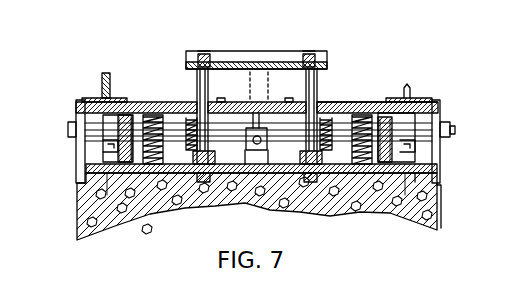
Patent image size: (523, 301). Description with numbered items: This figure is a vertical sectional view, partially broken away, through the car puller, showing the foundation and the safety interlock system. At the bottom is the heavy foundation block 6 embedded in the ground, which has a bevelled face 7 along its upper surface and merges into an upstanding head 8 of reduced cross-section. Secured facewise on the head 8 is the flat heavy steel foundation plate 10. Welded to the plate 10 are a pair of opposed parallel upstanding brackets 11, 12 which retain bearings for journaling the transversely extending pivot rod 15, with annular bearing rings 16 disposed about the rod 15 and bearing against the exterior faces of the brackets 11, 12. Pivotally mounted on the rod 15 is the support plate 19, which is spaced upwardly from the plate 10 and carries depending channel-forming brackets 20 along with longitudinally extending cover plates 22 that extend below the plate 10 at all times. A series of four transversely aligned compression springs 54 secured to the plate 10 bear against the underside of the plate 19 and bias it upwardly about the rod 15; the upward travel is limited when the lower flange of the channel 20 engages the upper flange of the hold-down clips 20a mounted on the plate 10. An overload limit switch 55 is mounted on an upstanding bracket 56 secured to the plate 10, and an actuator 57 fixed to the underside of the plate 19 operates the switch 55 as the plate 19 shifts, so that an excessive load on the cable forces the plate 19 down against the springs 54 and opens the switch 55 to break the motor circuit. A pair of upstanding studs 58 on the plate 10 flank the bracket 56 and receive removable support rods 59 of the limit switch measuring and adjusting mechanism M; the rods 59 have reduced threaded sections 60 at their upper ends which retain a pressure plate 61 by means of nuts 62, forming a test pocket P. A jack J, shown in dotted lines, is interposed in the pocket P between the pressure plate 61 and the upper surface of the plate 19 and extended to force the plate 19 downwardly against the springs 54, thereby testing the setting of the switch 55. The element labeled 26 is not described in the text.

The foundation block 6 is at (431, 202).
The bevelled face 7 is at (88, 205).
The upstanding head 8 is at (410, 180).
The foundation plate 10 is at (68, 152).
The upstanding bracket 11 is at (393, 160).
The upstanding bracket 12 is at (133, 167).
The pivot rod 15 is at (445, 133).
The annular bearing ring 16 is at (113, 127).
The support plate 19 is at (348, 100).
The channel-forming bracket 20 is at (98, 127).
The hold-down clip 20a is at (107, 165).
The cover plate 22 is at (88, 167).
The stop post 26 is at (102, 72).
The compression spring 54 is at (155, 117).
The overload limit switch 55 is at (265, 150).
The upstanding bracket 56 is at (242, 164).
The actuator 57 is at (258, 136).
The upstanding stud 58 is at (203, 167).
The support rod 59 is at (317, 90).
The threaded section 60 is at (205, 54).
The pressure plate 61 is at (263, 51).
The nut 62 is at (203, 50).
The jack J is at (250, 68).
The limit switch measuring and adjusting mechanism M is at (331, 53).
The test pocket P is at (228, 85).